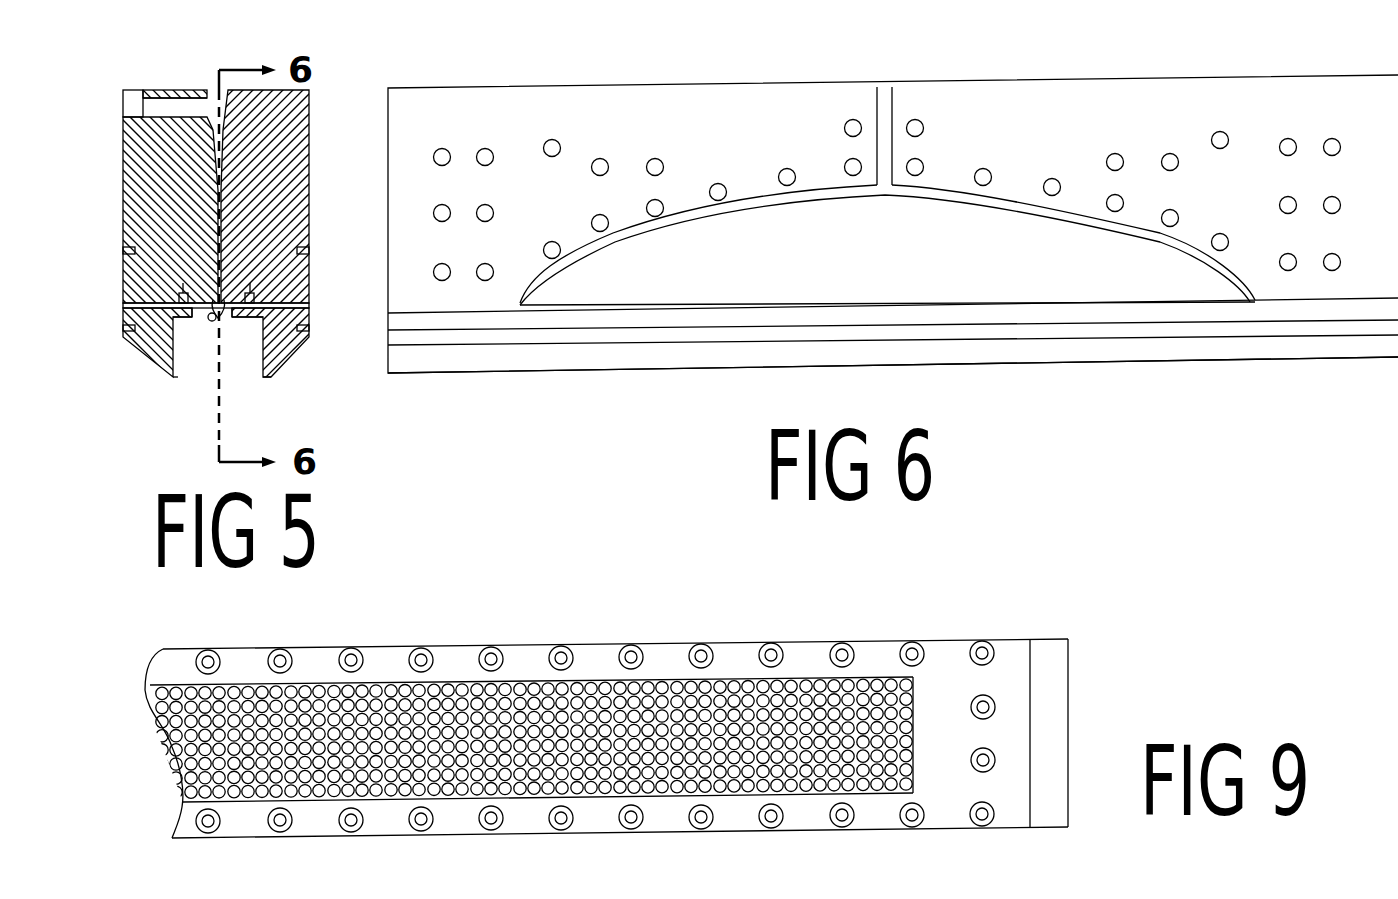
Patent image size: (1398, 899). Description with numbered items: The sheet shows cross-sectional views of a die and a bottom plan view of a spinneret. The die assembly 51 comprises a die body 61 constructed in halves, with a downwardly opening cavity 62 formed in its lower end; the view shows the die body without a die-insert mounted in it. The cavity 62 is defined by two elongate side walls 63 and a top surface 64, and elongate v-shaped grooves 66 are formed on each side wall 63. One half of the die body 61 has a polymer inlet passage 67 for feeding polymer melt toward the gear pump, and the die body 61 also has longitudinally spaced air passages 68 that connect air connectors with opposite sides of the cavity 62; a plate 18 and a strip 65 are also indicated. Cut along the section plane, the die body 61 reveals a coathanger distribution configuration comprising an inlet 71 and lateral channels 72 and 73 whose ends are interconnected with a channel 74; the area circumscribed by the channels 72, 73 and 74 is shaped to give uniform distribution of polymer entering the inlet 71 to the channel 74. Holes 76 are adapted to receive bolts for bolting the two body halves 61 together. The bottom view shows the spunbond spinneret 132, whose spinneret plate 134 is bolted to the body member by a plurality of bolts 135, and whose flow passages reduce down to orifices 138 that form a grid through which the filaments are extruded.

In FIG. 5, the plate 18 is at (130, 307).
In FIG. 5, the die assembly 51 is at (324, 62).
In FIG. 6, the die assembly 51 is at (513, 72).
In FIG. 5, the die body 61 is at (177, 197).
In FIG. 6, the die body 61 is at (441, 117).
In FIG. 5, the cavity 62 is at (247, 343).
In FIG. 5, the side walls 63 is at (176, 366).
In FIG. 6, the side walls 63 is at (458, 365).
In FIG. 5, the top surface 64 is at (197, 318).
In FIG. 6, the top surface 64 is at (453, 313).
In FIG. 9, the strip 65 is at (1108, 662).
In FIG. 5, the v-shaped grooves 66 is at (181, 363).
In FIG. 6, the v-shaped grooves 66 is at (390, 343).
In FIG. 5, the polymer inlet passage 67 is at (182, 106).
In FIG. 5, the air passages 68 is at (308, 303).
In FIG. 6, the inlet 71 is at (885, 100).
In FIG. 6, the lateral channel 72 is at (762, 208).
In FIG. 6, the lateral channel 73 is at (1003, 200).
In FIG. 5, the channel 74 is at (212, 272).
In FIG. 6, the channel 74 is at (830, 303).
In FIG. 6, the holes 76 is at (600, 160).
In FIG. 9, the spunbond spinneret 132 is at (742, 630).
In FIG. 9, the spinneret plate 134 is at (794, 835).
In FIG. 9, the bolts 135 is at (631, 830).
In FIG. 9, the orifices 138 is at (455, 690).